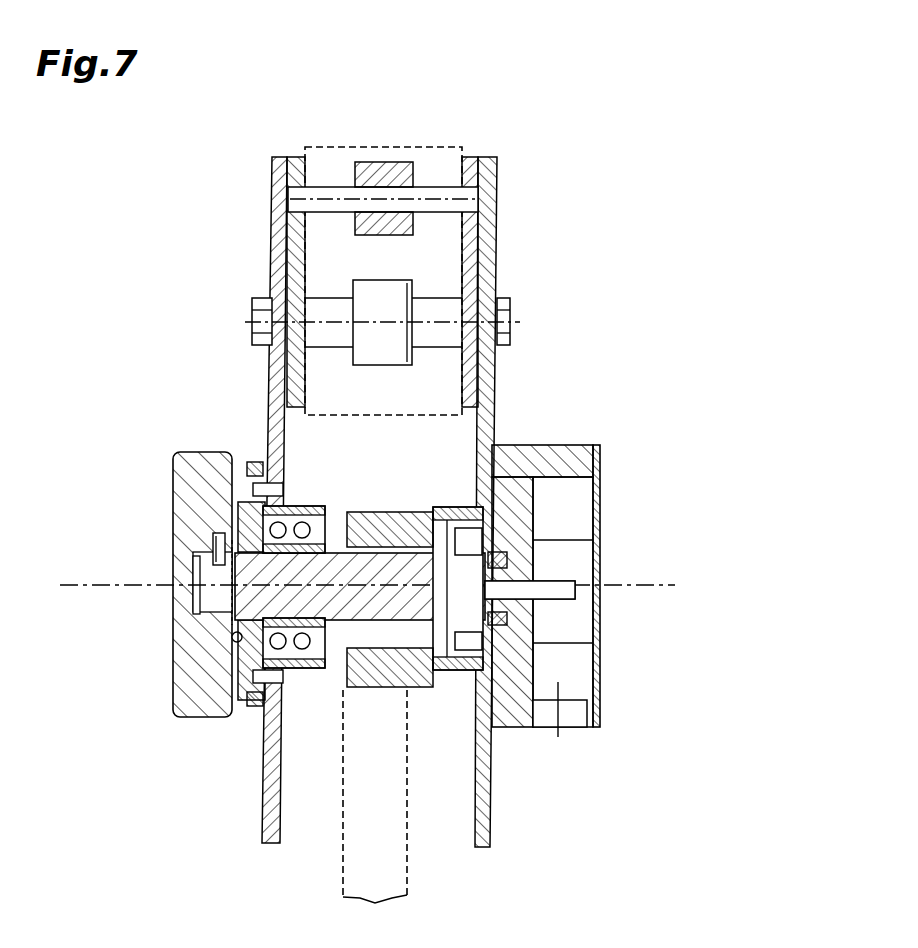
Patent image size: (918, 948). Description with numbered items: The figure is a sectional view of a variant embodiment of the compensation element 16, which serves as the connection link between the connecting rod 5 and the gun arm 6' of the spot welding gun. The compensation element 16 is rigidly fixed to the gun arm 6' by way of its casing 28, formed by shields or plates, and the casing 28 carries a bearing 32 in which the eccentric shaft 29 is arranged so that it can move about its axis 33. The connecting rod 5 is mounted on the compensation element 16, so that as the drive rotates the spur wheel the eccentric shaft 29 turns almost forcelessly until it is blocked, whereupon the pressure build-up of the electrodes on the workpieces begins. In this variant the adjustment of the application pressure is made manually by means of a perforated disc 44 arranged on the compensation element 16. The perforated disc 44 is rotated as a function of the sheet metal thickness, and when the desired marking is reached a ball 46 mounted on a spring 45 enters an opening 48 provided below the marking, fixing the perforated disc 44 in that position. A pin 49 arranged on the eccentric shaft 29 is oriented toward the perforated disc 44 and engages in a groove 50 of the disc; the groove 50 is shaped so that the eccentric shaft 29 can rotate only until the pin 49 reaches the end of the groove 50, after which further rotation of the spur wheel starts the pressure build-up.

The compensation element 16 is at (389, 432).
The gun arm 6' is at (363, 228).
The casing 28 is at (272, 232).
The groove 50 is at (212, 520).
The pin 49 is at (220, 550).
The opening 48 is at (182, 608).
The ball 46 is at (232, 637).
The perforated disc 44 is at (202, 643).
The spring 45 is at (228, 705).
The axis 33 is at (603, 590).
The bearing 32 is at (302, 668).
The eccentric shaft 29 is at (463, 592).
The connecting rod 5 is at (382, 835).